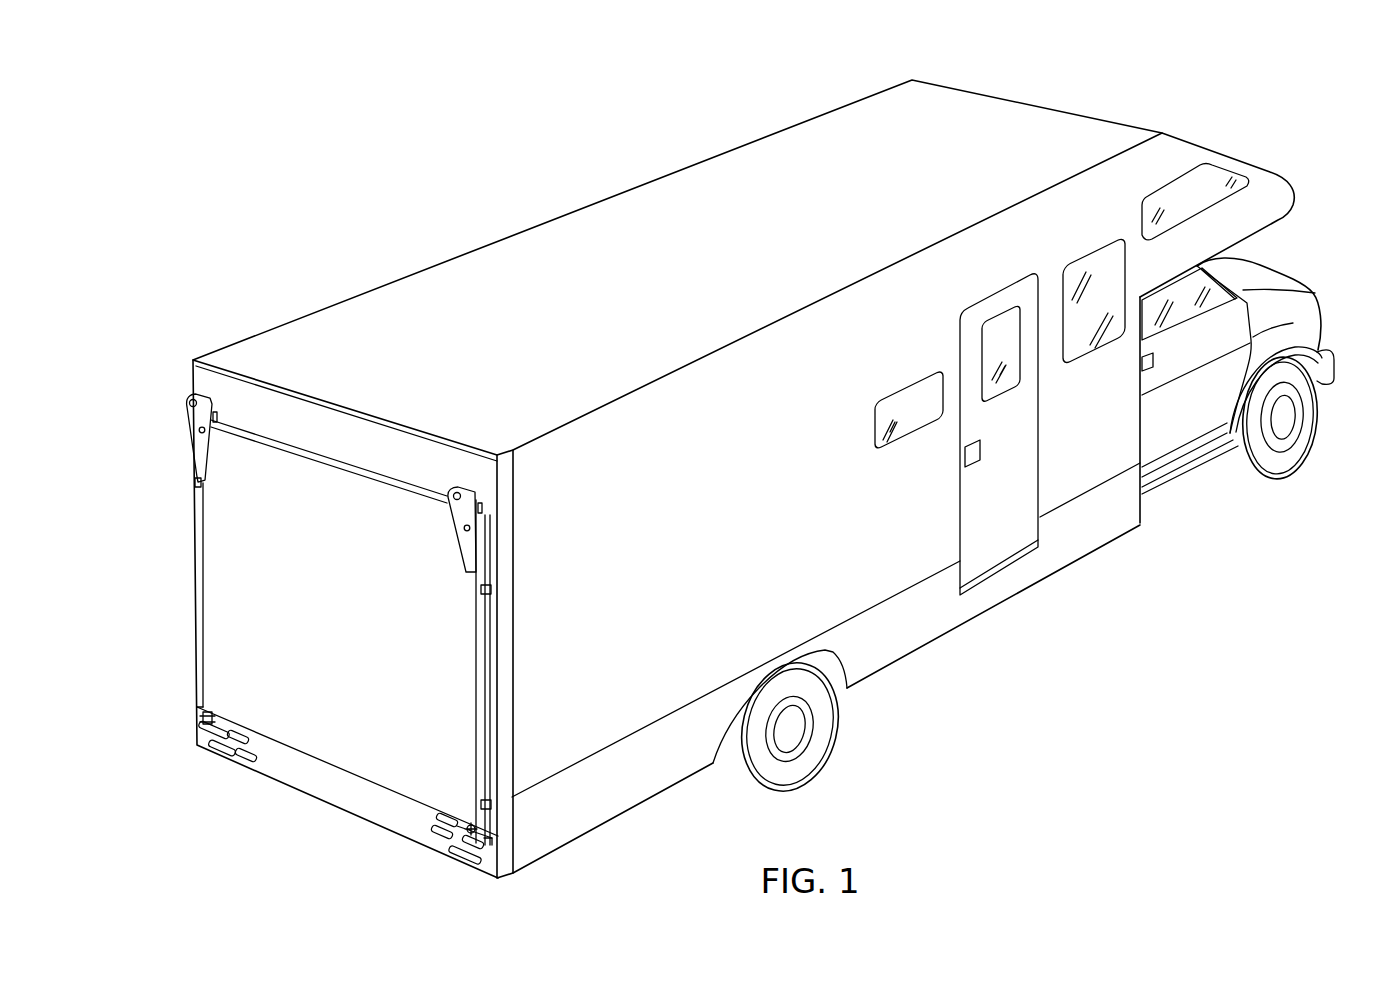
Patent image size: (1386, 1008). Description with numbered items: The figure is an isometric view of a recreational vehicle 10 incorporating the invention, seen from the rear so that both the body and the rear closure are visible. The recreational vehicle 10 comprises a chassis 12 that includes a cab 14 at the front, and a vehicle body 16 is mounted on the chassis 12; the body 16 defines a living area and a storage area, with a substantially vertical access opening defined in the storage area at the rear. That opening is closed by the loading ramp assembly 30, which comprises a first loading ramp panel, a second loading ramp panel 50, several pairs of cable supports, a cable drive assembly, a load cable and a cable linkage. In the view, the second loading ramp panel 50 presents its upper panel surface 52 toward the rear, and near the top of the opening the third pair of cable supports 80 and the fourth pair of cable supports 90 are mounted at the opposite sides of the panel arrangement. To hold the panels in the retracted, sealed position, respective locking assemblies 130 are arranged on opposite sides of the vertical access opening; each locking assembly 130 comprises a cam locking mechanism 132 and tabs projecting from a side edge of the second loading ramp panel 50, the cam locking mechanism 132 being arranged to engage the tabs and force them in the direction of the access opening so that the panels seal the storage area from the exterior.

The recreational vehicle 10 is at (591, 150).
The chassis 12 is at (1069, 602).
The cab 14 is at (1302, 250).
The vehicle body 16 is at (912, 80).
The loading ramp assembly 30 is at (278, 820).
The second loading ramp panel 50 is at (222, 532).
The upper panel surface 52 is at (268, 515).
The third pair of cable supports 80 is at (185, 420).
The fourth pair of cable supports 90 is at (208, 437).
The locking assembly 130 is at (180, 714).
The cam locking mechanism 132 is at (510, 603).